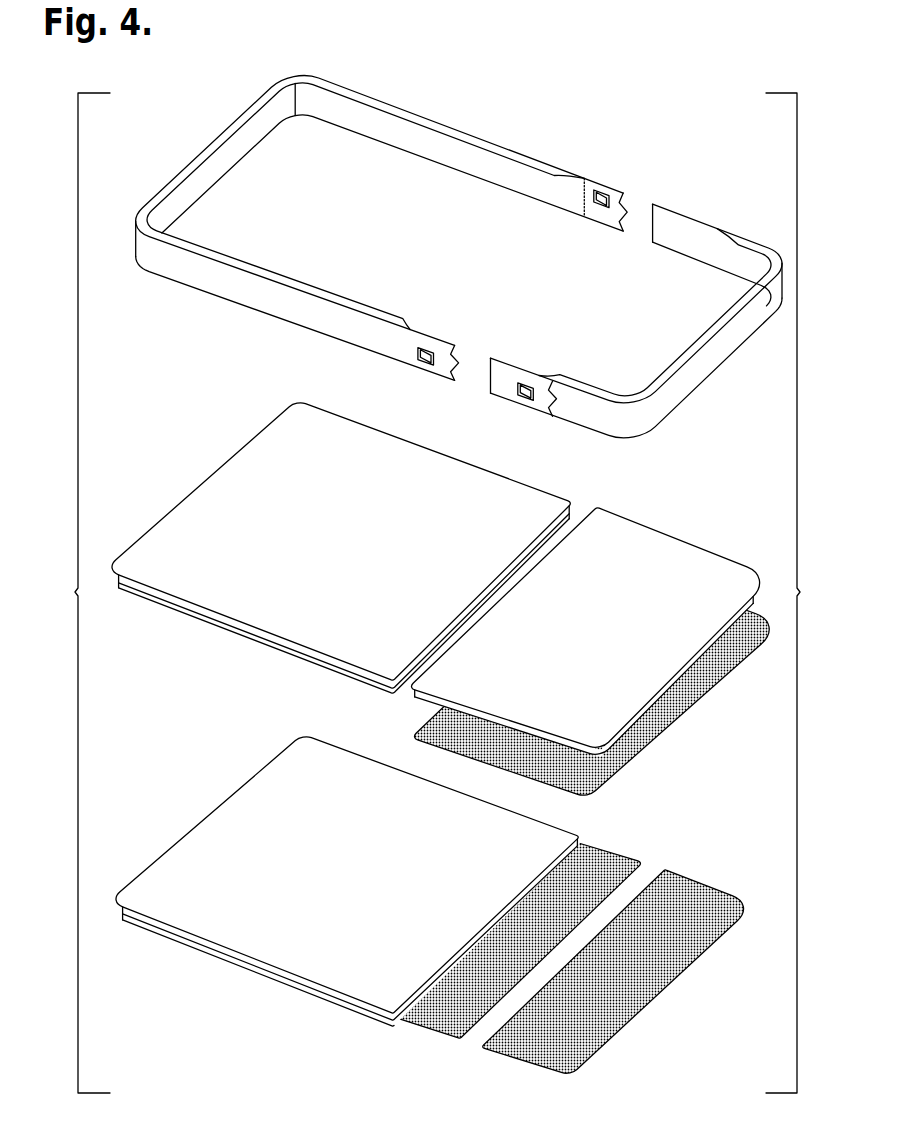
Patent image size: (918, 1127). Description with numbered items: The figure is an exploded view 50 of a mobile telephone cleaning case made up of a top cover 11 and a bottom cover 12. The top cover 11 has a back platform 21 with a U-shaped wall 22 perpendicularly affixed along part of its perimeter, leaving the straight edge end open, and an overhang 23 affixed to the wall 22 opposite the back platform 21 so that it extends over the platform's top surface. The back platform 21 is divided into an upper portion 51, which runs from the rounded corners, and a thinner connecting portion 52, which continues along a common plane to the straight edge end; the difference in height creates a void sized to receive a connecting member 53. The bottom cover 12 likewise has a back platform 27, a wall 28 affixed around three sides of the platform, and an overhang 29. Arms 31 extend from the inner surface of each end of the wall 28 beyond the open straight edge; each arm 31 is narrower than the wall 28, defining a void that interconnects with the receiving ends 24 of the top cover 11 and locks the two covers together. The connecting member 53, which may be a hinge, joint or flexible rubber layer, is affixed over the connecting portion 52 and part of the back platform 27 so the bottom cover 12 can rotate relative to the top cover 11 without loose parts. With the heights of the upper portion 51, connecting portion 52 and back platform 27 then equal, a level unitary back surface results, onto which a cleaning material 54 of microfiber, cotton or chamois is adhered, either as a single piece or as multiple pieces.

The top cover 11 is at (75, 593).
The bottom cover 12 is at (799, 593).
The back platform 21 is at (198, 810).
The wall 22 is at (170, 278).
The overhang 23 is at (182, 158).
The receiving ends 24 is at (416, 372).
The back platform 27 is at (670, 993).
The wall 28 is at (633, 440).
The overhang 29 is at (747, 230).
The arms 31 is at (673, 200).
The exploded view 50 is at (125, 76).
The upper portion 51 is at (388, 1017).
The connecting portion 52 is at (456, 1046).
The connecting member 53 is at (687, 720).
The cleaning material 54 is at (190, 487).